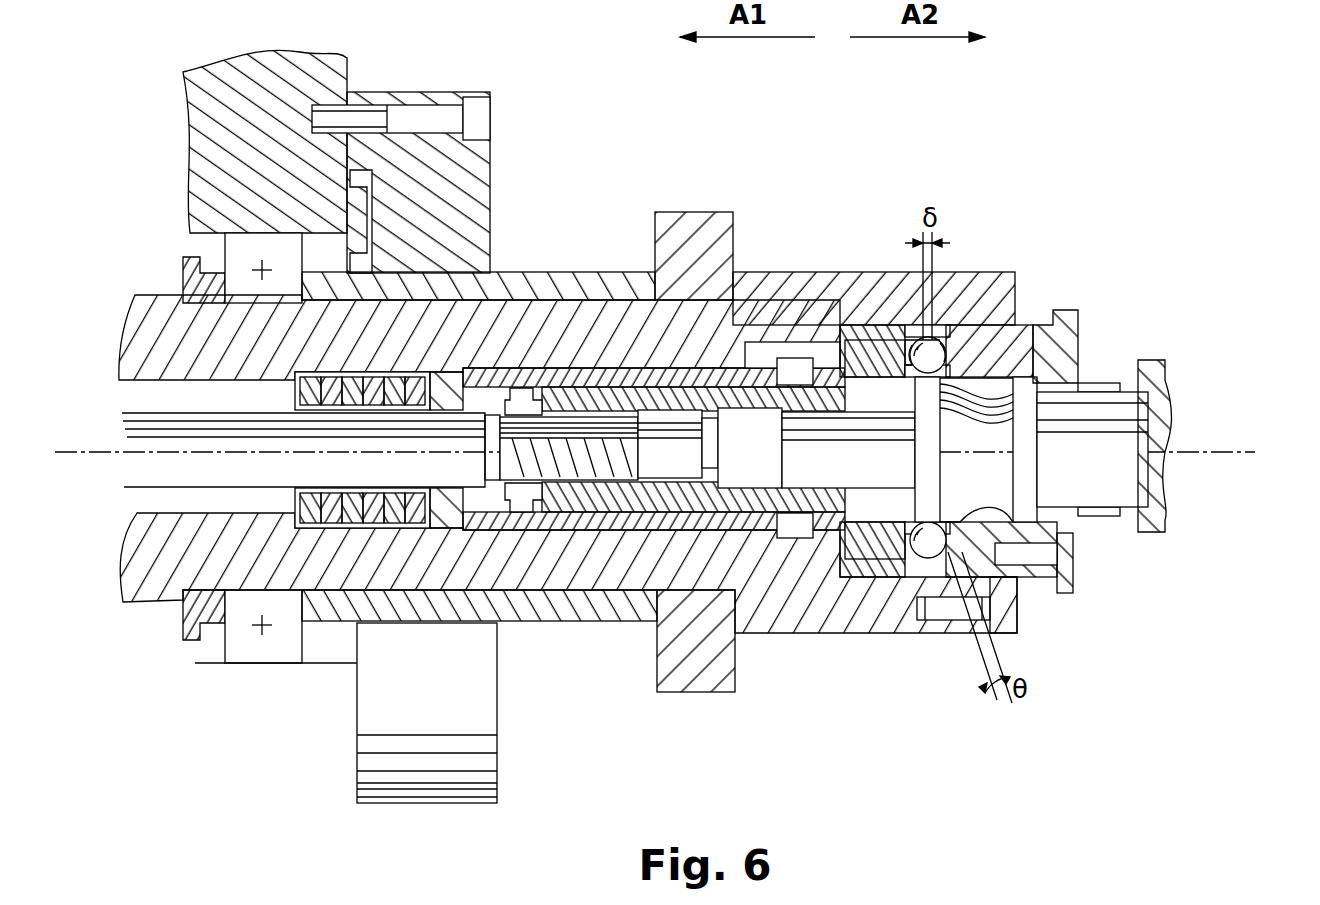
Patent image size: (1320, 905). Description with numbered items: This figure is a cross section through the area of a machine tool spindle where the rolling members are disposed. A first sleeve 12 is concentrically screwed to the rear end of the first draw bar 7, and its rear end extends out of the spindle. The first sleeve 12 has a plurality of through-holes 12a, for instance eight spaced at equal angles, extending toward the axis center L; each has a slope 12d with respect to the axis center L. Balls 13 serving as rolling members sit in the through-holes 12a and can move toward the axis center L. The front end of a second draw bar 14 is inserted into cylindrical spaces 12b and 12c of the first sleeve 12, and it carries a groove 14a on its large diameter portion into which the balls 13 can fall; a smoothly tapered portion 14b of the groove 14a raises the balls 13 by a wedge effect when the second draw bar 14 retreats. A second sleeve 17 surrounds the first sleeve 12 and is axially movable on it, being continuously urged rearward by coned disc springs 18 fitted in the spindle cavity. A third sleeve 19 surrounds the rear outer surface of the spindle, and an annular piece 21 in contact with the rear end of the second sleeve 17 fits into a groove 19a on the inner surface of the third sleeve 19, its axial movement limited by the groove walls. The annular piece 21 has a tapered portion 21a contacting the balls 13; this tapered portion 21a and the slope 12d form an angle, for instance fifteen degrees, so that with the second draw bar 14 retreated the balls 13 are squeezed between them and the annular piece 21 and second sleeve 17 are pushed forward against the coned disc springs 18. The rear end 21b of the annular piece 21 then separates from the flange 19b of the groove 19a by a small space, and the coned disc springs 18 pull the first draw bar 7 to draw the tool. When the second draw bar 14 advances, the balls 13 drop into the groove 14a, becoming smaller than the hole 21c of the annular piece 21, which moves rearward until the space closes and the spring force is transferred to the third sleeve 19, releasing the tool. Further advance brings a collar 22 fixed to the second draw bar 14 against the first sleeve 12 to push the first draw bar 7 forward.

The first draw bar 7 is at (253, 467).
The first sleeve 12 is at (680, 495).
The through-holes 12a is at (1013, 618).
The cylindrical space 12b is at (877, 513).
The cylindrical space 12c is at (840, 483).
The slope 12d is at (978, 385).
The balls 13 is at (942, 590).
The second draw bar 14 is at (1127, 510).
The groove 14a is at (1140, 355).
The tapered portion 14b is at (1020, 300).
The second sleeve 17 is at (740, 307).
The coned disc springs 18 is at (340, 473).
The third sleeve 19 is at (862, 525).
The groove 19a is at (845, 345).
The flange 19b is at (942, 330).
The annular piece 21 is at (890, 352).
The tapered portion 21a is at (952, 335).
The rear end 21b is at (927, 335).
The hole 21c is at (865, 320).
The collar 22 is at (1167, 362).
The axis center L is at (1232, 447).